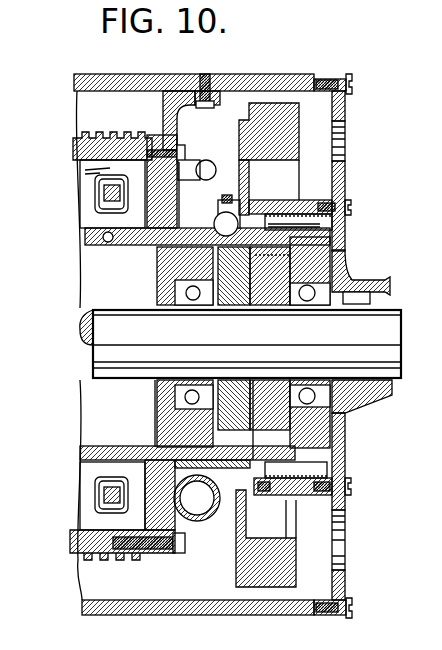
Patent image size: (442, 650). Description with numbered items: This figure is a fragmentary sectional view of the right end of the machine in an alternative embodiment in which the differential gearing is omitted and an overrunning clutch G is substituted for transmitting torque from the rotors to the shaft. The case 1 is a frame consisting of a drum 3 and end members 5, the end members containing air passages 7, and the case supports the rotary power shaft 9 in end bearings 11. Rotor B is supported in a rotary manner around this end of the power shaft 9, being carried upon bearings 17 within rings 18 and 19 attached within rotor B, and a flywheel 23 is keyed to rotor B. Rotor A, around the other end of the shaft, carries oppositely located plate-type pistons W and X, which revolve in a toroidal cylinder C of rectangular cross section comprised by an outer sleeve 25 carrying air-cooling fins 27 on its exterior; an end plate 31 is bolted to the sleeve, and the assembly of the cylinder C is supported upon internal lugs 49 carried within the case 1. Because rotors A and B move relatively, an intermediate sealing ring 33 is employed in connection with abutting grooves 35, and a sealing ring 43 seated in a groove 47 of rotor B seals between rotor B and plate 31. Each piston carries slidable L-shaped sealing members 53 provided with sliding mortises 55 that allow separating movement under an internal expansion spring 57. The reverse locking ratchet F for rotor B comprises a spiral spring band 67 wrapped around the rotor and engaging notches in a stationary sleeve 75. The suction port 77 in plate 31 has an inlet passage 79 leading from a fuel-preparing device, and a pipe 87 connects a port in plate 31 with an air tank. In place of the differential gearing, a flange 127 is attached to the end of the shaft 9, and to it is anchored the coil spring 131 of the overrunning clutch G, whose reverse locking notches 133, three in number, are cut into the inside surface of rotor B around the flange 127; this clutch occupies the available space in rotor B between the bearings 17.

The case 1 is at (281, 66).
The drum 3 is at (137, 78).
The end members 5 is at (344, 467).
The air passages 7 is at (347, 150).
The rotary power shaft 9 is at (396, 364).
The end bearings 11 is at (265, 184).
The bearings 17 is at (178, 297).
The ring 18 is at (332, 241).
The ring 19 is at (160, 281).
The flywheel 23 is at (282, 135).
The outer sleeve 25 is at (73, 146).
The air-cooling fins 27 is at (102, 131).
The end plate 31 is at (150, 191).
The sealing ring 33 is at (108, 246).
The abutting grooves 35 is at (85, 237).
The sealing ring 43 is at (148, 218).
The groove 47 is at (146, 447).
The internal lugs 49 is at (178, 116).
The L-shaped sealing members 53 is at (134, 131).
The sliding mortises 55 is at (82, 168).
The internal expansion spring 57 is at (98, 183).
The spiral spring band 67 is at (295, 472).
The stationary sleeve 75 is at (285, 480).
The suction port 77 is at (180, 540).
The inlet passage 79 is at (197, 498).
The pipe 87 is at (206, 162).
The flange 127 is at (262, 311).
The coil spring 131 is at (333, 491).
The reverse locking notches 133 is at (334, 219).
The rotor A is at (85, 251).
The rotor B is at (137, 249).
The toroidal cylinder C is at (85, 134).
The reverse locking ratchet F is at (362, 218).
The overrunning clutch G is at (228, 307).
The plate-type piston W is at (104, 194).
The plate-type piston X is at (104, 498).